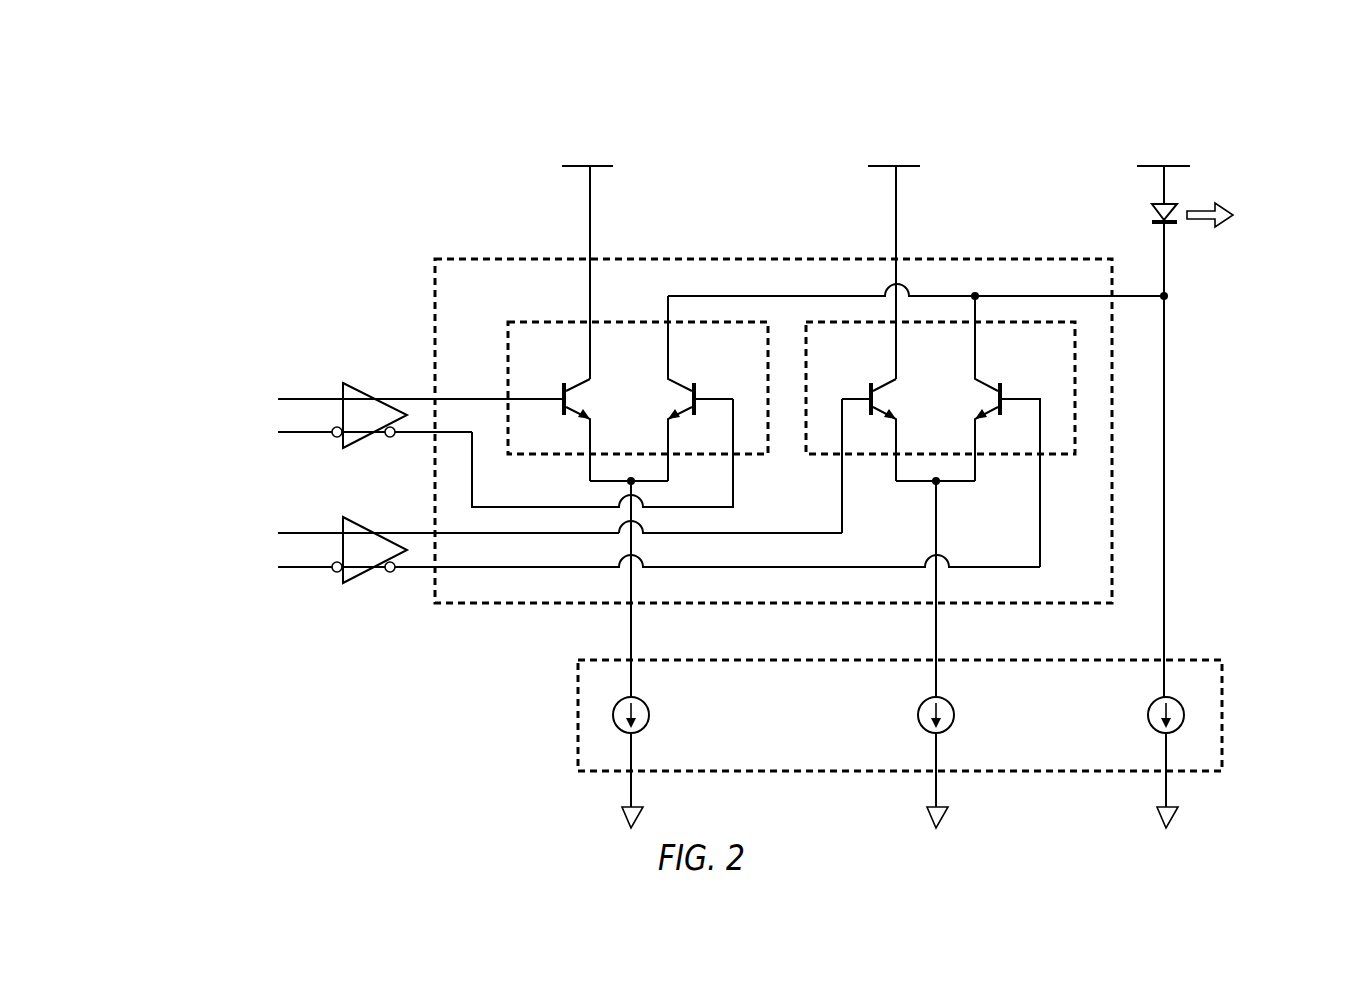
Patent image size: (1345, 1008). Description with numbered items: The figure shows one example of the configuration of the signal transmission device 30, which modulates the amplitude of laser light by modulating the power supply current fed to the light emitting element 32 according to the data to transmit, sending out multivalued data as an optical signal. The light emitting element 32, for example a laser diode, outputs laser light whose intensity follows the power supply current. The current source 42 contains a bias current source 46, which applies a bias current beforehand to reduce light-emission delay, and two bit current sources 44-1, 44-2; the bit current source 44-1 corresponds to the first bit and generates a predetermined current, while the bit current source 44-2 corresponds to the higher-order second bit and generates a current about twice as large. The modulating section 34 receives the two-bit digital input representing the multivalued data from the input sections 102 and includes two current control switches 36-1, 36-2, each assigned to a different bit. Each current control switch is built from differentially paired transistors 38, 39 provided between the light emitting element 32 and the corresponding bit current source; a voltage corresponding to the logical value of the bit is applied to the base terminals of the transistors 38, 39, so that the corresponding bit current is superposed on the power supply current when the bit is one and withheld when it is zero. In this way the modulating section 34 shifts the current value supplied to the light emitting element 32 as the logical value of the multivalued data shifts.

The signal transmission device 30 is at (1278, 96).
The light emitting element 32 is at (1153, 208).
The modulating section 34 is at (510, 258).
The current control switch 36-1 is at (549, 320).
The current control switch 36-2 is at (822, 456).
The transistor 38 is at (578, 383).
The transistor 39 is at (679, 383).
The current source 42 is at (1224, 718).
The bit current source 44-1 is at (646, 727).
The bit current source 44-2 is at (951, 727).
The bias current source 46 is at (1159, 734).
The input section 102 is at (360, 386).